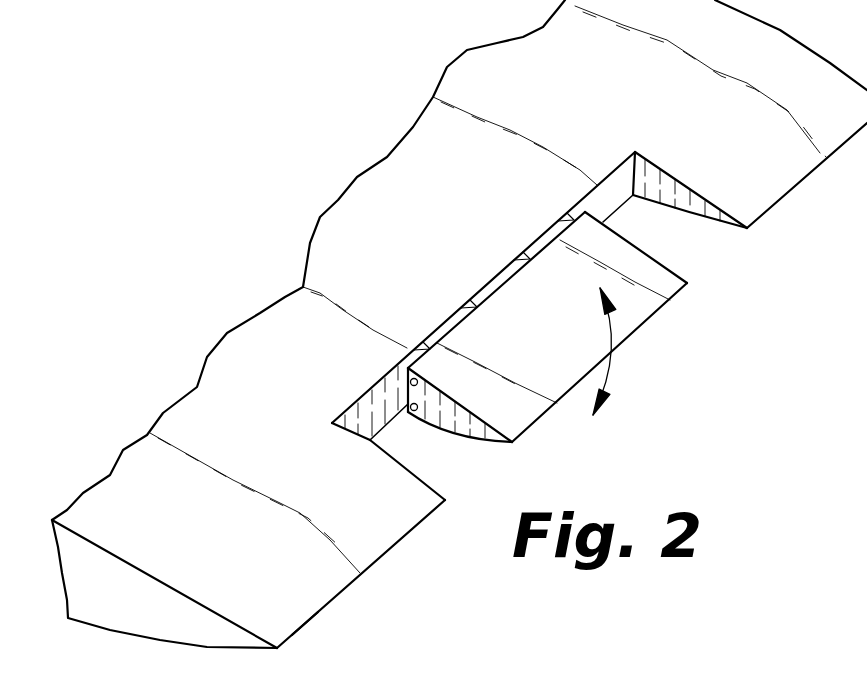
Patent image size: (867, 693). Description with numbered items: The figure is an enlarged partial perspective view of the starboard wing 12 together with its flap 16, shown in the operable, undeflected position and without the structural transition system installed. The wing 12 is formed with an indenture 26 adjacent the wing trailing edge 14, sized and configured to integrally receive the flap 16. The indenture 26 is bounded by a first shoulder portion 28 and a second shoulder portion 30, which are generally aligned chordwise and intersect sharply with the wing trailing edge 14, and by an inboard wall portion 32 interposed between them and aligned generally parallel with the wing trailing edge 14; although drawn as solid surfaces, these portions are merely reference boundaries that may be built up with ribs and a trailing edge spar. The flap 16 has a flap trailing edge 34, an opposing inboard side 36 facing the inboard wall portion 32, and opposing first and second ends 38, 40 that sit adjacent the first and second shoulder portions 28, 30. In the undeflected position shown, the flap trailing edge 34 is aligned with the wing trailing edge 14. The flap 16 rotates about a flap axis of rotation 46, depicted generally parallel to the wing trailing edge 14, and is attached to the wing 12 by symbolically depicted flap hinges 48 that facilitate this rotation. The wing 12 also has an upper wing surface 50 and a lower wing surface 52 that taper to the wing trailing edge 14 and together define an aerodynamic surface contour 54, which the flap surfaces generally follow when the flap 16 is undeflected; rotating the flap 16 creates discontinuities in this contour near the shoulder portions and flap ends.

The starboard wing 12 is at (410, 223).
The wing trailing edge 14 is at (334, 601).
The flap 16 is at (568, 342).
The indenture 26 is at (450, 485).
The first shoulder portion 28 is at (390, 459).
The second shoulder portion 30 is at (690, 195).
The inboard wall portion 32 is at (380, 390).
The flap trailing edge 34 is at (655, 313).
The inboard side 36 is at (483, 296).
The first end 38 is at (480, 427).
The second end 40 is at (670, 267).
The flap axis of rotation 46 is at (425, 390).
The flap hinges 48 is at (537, 243).
The upper wing surface 50 is at (302, 626).
The lower wing surface 52 is at (157, 640).
The aerodynamic surface contour 54 is at (126, 478).